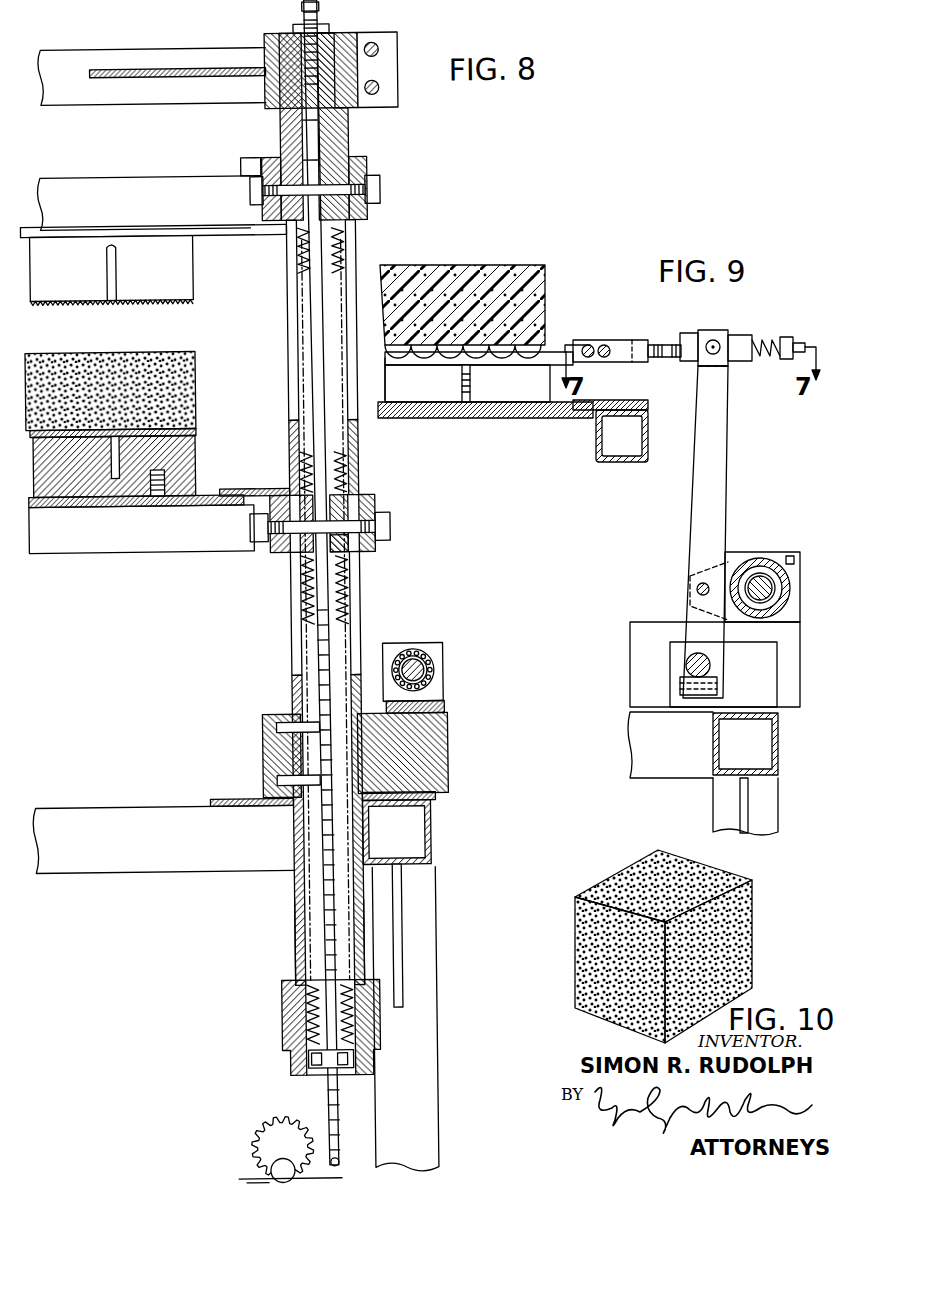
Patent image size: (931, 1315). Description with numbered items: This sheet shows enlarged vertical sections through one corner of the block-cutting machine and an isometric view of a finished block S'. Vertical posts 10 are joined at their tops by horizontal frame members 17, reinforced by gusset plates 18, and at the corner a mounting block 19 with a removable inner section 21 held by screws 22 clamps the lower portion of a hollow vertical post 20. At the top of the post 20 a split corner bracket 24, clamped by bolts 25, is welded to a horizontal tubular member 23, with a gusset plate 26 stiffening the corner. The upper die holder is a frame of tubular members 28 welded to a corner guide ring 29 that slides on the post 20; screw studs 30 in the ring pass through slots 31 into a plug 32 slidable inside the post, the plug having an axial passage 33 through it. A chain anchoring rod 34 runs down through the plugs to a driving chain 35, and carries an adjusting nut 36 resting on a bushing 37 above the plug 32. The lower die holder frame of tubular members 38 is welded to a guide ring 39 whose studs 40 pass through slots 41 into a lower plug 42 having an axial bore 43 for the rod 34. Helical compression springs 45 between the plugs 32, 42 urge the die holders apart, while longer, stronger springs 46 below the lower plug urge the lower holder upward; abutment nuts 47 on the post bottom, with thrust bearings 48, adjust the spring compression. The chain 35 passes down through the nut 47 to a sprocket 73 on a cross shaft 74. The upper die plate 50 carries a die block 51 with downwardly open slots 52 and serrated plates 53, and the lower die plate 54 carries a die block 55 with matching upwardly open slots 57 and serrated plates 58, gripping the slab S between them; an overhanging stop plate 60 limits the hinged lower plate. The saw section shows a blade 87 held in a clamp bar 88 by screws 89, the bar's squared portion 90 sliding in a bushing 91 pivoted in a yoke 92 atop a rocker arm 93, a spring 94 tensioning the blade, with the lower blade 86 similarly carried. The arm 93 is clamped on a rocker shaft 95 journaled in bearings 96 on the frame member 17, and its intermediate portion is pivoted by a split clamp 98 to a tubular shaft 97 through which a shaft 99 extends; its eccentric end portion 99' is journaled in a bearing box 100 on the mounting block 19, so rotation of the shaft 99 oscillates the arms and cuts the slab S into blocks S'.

In FIG. 8, the posts 10 is at (420, 1006).
In FIG. 9, the posts 10 is at (775, 816).
In FIG. 8, the horizontal frame members 17 is at (430, 831).
In FIG. 9, the horizontal frame members 17 is at (632, 770).
In FIG. 8, the gusset plates 18 is at (400, 920).
In FIG. 9, the gusset plates 18 is at (750, 793).
In FIG. 8, the mounting blocks 19 is at (440, 752).
In FIG. 9, the mounting blocks 19 is at (640, 628).
In FIG. 8, the vertical tubes or cylindrical posts 20 is at (292, 905).
In FIG. 8, the removable inner sections 21 is at (261, 748).
In FIG. 8, the screws 22 is at (275, 714).
In FIG. 8, the horizontal tubular members 23 is at (58, 60).
In FIG. 8, the split corner brackets 24 is at (365, 45).
In FIG. 8, the bolts 25 is at (388, 50).
In FIG. 8, the gusset plates 26 is at (151, 80).
In FIG. 8, the horizontal tubular members 28 is at (62, 180).
In FIG. 8, the corner guide rings 29 is at (370, 160).
In FIG. 8, the screw studs 30 is at (258, 190).
In FIG. 8, the slots 31 is at (360, 240).
In FIG. 8, the plugs 32 is at (342, 128).
In FIG. 8, the sleeve 33 is at (295, 120).
In FIG. 8, the chain anchoring rods 34 is at (312, 143).
In FIG. 8, the driving chains 35 is at (318, 624).
In FIG. 8, the adjusting nuts 36 is at (307, 9).
In FIG. 8, the bushings 37 is at (330, 38).
In FIG. 8, the horizontal tubular members 38 is at (102, 552).
In FIG. 9, the horizontal tubular members 38 is at (610, 462).
In FIG. 8, the corner guide rings 39 is at (378, 498).
In FIG. 8, the screw studs 40 is at (250, 527).
In FIG. 8, the slots 41 is at (358, 668).
In FIG. 8, the plugs 42 is at (346, 542).
In FIG. 8, the axial bores 43 is at (352, 490).
In FIG. 8, the helical compression springs 45 is at (302, 262).
In FIG. 8, the helical compression springs 46 is at (352, 605).
In FIG. 8, the abutment nuts 47 is at (279, 1012).
In FIG. 8, the thrust bearings 48 is at (305, 1058).
In FIG. 8, the die plate 50 is at (228, 234).
In FIG. 8, the die block 51 is at (204, 276).
In FIG. 8, the slots 52 is at (116, 285).
In FIG. 8, the serrated plates 53 is at (168, 300).
In FIG. 8, the die plate 54 is at (113, 505).
In FIG. 9, the die plate 54 is at (424, 418).
In FIG. 8, the die block 55 is at (206, 463).
In FIG. 9, the die block 55 is at (522, 398).
In FIG. 8, the slots 57 is at (112, 452).
In FIG. 9, the slots 57 is at (468, 405).
In FIG. 8, the serrated plates 58 is at (200, 432).
In FIG. 8, the stop plate 60 is at (245, 489).
In FIG. 9, the stop plate 60 is at (598, 400).
In FIG. 8, the sprockets 73 is at (265, 1122).
In FIG. 8, the cross shaft 74 is at (270, 1166).
In FIG. 8, the saw blades 86 is at (128, 478).
In FIG. 9, the saw blades 86 is at (471, 382).
In FIG. 9, the saw blades 87 is at (555, 345).
In FIG. 9, the clamp bar 88 is at (628, 342).
In FIG. 9, the screws 89 is at (606, 345).
In FIG. 9, the squared portion 90 is at (664, 343).
In FIG. 9, the bushing 91 is at (728, 337).
In FIG. 9, the yoke 92 is at (720, 356).
In FIG. 9, the rocker arm 93 is at (722, 472).
In FIG. 9, the spring 94 is at (768, 340).
In FIG. 9, the rocker shaft 95 is at (712, 666).
In FIG. 9, the bearings 96 is at (770, 692).
In FIG. 9, the tubular shafts 97 is at (770, 556).
In FIG. 9, the split clamps 98 is at (738, 552).
In FIG. 8, the shafts 99 is at (451, 656).
In FIG. 9, the shafts 99 is at (785, 565).
In FIG. 8, the eccentric end portions 99' is at (456, 670).
In FIG. 8, the bearing boxes 100 is at (442, 692).
In FIG. 8, the slab S is at (125, 390).
In FIG. 9, the slab S is at (472, 286).
In FIG. 10, the blocks S' is at (685, 946).